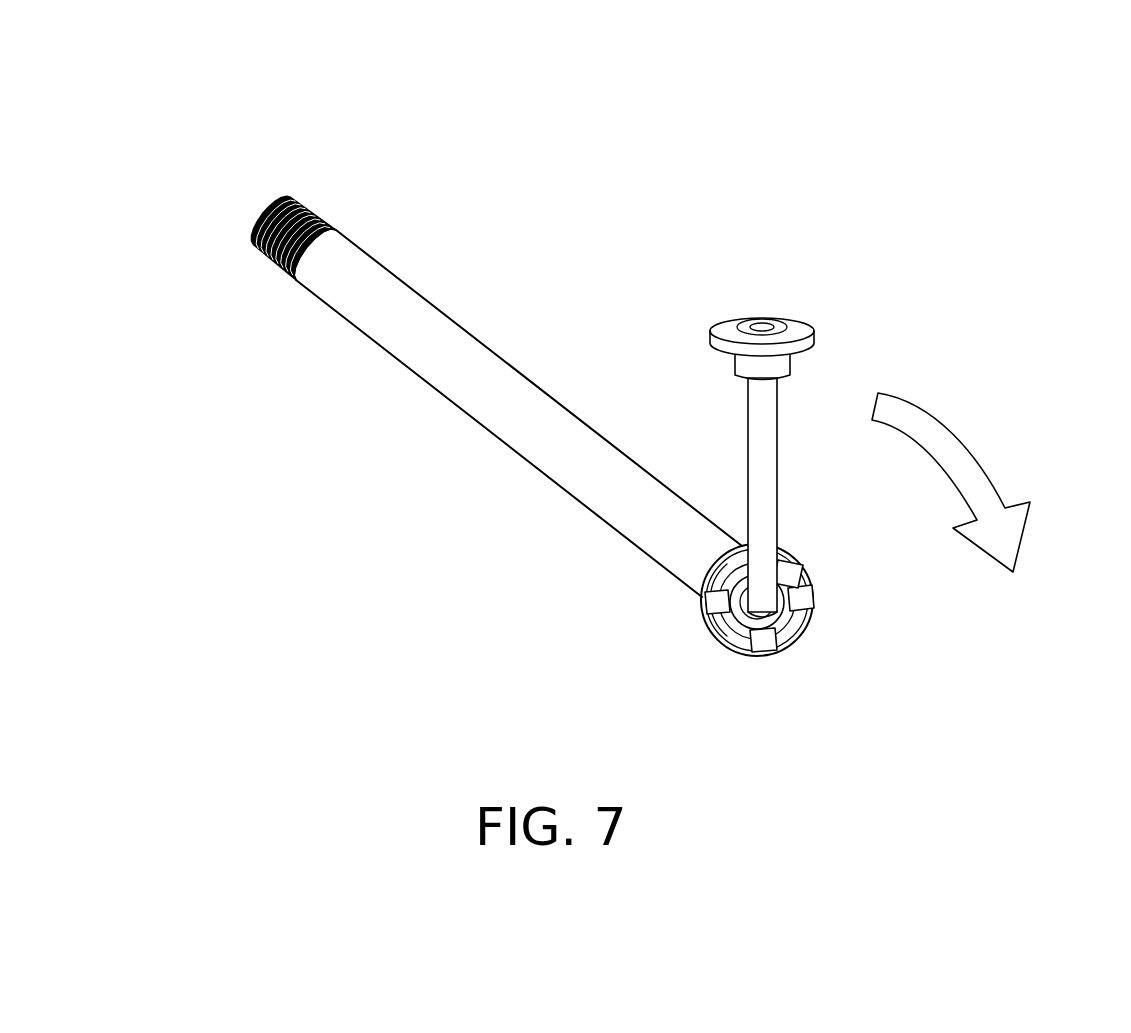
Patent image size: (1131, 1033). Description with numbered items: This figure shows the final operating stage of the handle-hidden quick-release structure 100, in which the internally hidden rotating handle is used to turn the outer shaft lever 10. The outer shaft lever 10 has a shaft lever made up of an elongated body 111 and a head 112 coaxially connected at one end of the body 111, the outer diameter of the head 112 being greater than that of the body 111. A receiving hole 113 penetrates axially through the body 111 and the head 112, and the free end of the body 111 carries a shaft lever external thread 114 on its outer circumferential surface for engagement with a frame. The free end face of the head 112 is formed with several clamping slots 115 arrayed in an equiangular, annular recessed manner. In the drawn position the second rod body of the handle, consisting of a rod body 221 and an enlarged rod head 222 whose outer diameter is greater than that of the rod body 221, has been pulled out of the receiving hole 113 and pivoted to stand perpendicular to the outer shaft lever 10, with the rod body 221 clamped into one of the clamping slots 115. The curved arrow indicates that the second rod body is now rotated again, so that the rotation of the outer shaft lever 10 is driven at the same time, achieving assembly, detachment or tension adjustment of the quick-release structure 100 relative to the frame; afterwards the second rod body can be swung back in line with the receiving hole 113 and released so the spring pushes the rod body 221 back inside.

The handle-hidden quick-release structure 100 is at (1093, 140).
The outer shaft lever 10 is at (486, 300).
The body 111 is at (488, 410).
The head 112 is at (719, 650).
The receiving hole 113 is at (725, 563).
The shaft lever external thread 114 is at (260, 258).
The clamping slots 115 is at (812, 567).
The rod body 221 is at (762, 423).
The rod head 222 is at (722, 337).